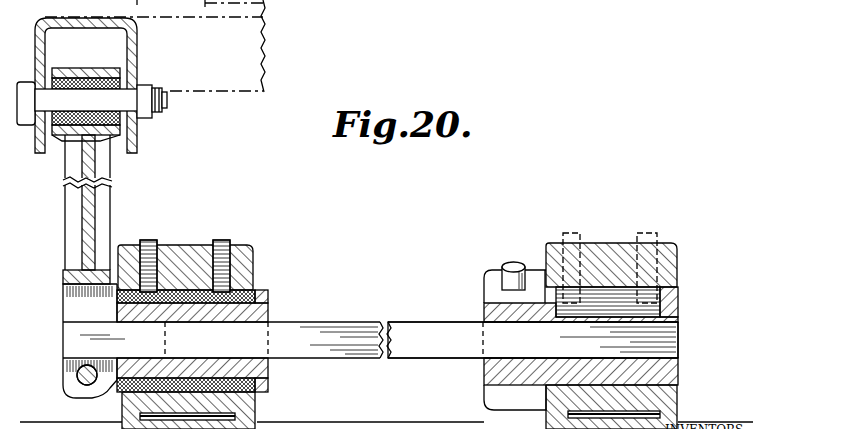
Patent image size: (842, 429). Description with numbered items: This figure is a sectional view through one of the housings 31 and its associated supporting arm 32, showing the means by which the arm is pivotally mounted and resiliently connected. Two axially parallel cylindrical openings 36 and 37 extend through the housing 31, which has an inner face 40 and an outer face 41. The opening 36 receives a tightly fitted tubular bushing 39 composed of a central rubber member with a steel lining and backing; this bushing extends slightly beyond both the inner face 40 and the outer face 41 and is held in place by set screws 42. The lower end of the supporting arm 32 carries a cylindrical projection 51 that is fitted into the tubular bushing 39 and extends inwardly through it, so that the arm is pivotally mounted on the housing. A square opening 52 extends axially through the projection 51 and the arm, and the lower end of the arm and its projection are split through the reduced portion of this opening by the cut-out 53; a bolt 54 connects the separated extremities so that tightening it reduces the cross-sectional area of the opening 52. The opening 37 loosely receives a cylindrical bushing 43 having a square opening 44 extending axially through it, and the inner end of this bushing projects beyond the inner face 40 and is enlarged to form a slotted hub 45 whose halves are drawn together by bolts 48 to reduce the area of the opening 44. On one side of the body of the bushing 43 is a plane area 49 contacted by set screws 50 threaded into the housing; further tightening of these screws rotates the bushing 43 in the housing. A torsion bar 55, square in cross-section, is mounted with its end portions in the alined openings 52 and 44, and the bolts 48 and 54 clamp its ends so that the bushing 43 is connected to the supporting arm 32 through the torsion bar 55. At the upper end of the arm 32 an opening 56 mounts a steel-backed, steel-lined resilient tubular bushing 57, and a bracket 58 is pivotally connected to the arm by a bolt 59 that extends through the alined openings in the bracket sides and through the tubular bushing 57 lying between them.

The housing 31 is at (253, 278).
The supporting arm 32 is at (110, 206).
The cylindrical opening 36 is at (258, 396).
The cylindrical opening 37 is at (679, 397).
The tubular bushing 39 is at (266, 298).
The inner face 40 is at (253, 260).
The outer face 41 is at (119, 247).
The set screws 42 is at (150, 241).
The cylindrical bushing 43 is at (483, 392).
The square opening 44 is at (679, 365).
The hub 45 is at (484, 296).
The bolts 48 is at (502, 271).
The plane area 49 is at (642, 312).
The set screws 50 is at (637, 235).
The cylindrical projection 51 is at (268, 314).
The square opening 52 is at (234, 323).
The cut-out 53 is at (68, 305).
The bolt 54 is at (78, 388).
The torsion bar 55 is at (352, 357).
The opening 56 is at (74, 70).
The resilient tubular bushing 57 is at (128, 80).
The bracket 58 is at (137, 45).
The bolt 59 is at (153, 118).